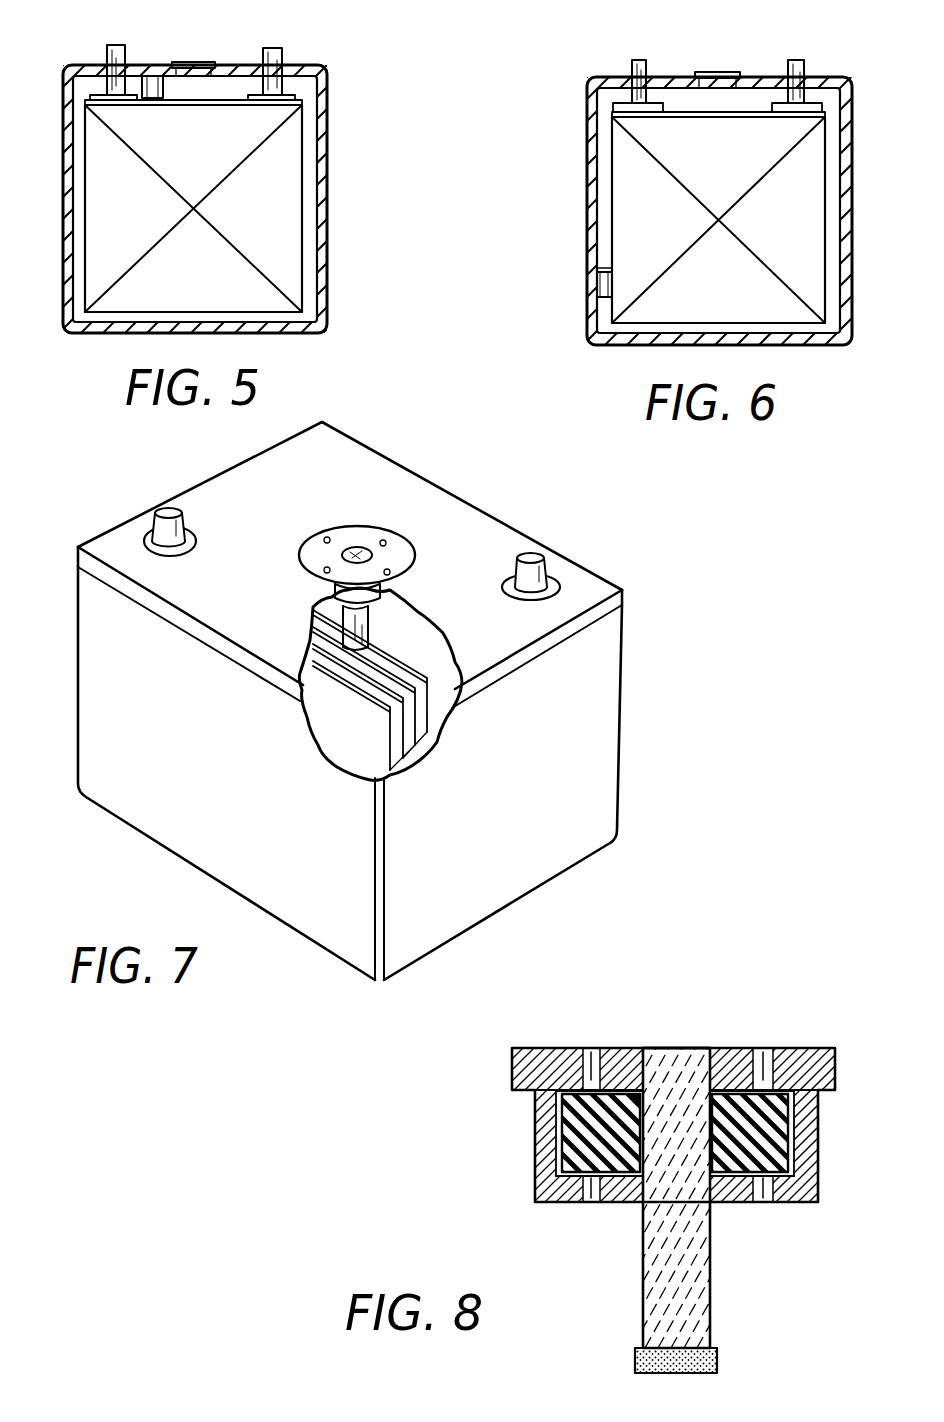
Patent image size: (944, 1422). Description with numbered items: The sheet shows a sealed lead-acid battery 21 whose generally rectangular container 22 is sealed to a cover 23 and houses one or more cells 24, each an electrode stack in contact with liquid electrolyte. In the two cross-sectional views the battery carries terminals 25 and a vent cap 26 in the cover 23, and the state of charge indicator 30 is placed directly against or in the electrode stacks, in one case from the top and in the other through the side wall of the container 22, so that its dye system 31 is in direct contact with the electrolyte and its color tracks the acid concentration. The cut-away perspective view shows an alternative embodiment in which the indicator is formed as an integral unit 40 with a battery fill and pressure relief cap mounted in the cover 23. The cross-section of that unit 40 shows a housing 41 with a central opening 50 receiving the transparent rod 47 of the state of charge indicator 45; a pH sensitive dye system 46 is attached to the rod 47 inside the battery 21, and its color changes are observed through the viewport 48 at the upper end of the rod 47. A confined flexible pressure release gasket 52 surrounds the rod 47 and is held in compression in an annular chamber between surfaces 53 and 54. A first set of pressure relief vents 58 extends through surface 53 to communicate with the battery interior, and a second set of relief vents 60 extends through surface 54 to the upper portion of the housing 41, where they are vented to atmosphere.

In FIG. 5, the battery 21 is at (326, 83).
In FIG. 6, the battery 21 is at (585, 91).
In FIG. 7, the battery 21 is at (387, 701).
In FIG. 7, the container 22 is at (618, 724).
In FIG. 7, the cover 23 is at (625, 592).
In FIG. 5, the cells 24 is at (208, 167).
In FIG. 6, the cells 24 is at (731, 171).
In FIG. 7, the cells 24 is at (372, 755).
In FIG. 5, the terminal post 25 is at (107, 52).
In FIG. 6, the terminal post 25 is at (632, 68).
In FIG. 7, the terminal post 25 is at (153, 520).
In FIG. 5, the vent cap 26 is at (193, 62).
In FIG. 6, the vent cap 26 is at (705, 72).
In FIG. 5, the state of charge indicator 30 is at (151, 56).
In FIG. 6, the state of charge indicator 30 is at (597, 288).
In FIG. 5, the dye system 31 is at (178, 98).
In FIG. 6, the dye system 31 is at (597, 275).
In FIG. 7, the integral unit 40 is at (372, 560).
In FIG. 8, the integral unit 40 is at (746, 1020).
In FIG. 8, the housing 41 is at (651, 1122).
In FIG. 8, the state of charge indicator 45 is at (670, 1180).
In FIG. 8, the pH sensitive dye system 46 is at (718, 1360).
In FIG. 8, the transparent rod 47 is at (712, 1306).
In FIG. 7, the viewport 48 is at (365, 552).
In FIG. 8, the viewport 48 is at (668, 1048).
In FIG. 8, the central opening 50 is at (652, 1048).
In FIG. 8, the pressure release gasket 52 is at (565, 1160).
In FIG. 8, the surface 53 is at (560, 1198).
In FIG. 8, the surface 54 is at (562, 1100).
In FIG. 8, the first set of pressure relief vents 58 is at (592, 1202).
In FIG. 8, the second set of relief vents 60 is at (585, 1048).